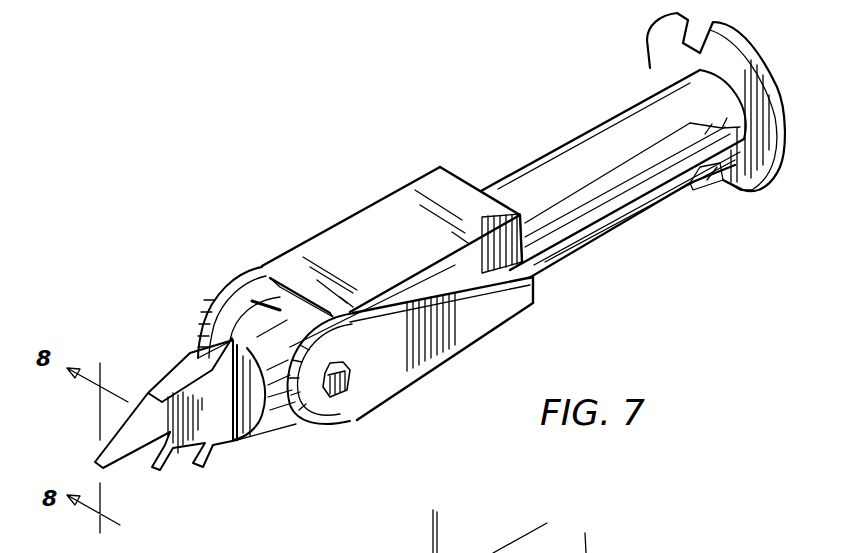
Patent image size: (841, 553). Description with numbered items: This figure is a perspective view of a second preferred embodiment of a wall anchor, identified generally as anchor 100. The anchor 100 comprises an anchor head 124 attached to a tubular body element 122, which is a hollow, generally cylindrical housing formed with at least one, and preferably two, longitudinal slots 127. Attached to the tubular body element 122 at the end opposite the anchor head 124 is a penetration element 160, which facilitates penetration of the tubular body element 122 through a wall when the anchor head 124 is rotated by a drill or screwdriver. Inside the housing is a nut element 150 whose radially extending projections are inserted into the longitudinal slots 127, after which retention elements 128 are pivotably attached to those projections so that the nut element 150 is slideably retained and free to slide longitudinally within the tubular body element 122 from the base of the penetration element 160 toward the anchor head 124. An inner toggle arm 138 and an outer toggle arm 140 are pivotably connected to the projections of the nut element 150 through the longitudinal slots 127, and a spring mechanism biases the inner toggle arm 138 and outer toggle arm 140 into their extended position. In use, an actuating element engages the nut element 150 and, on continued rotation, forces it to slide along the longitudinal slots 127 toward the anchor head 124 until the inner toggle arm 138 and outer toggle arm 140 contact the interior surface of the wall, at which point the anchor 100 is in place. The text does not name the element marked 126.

The wall anchor 100 is at (347, 207).
The tubular body element 122 is at (603, 233).
The anchor head 124 is at (785, 105).
The rim of head plate 126 is at (767, 170).
The longitudinal slots 127 is at (574, 222).
The retention elements 128 is at (387, 403).
The inner toggle arm 138 is at (400, 210).
The outer toggle arm 140 is at (395, 378).
The nut element 150 is at (347, 390).
The penetration element 160 is at (148, 483).